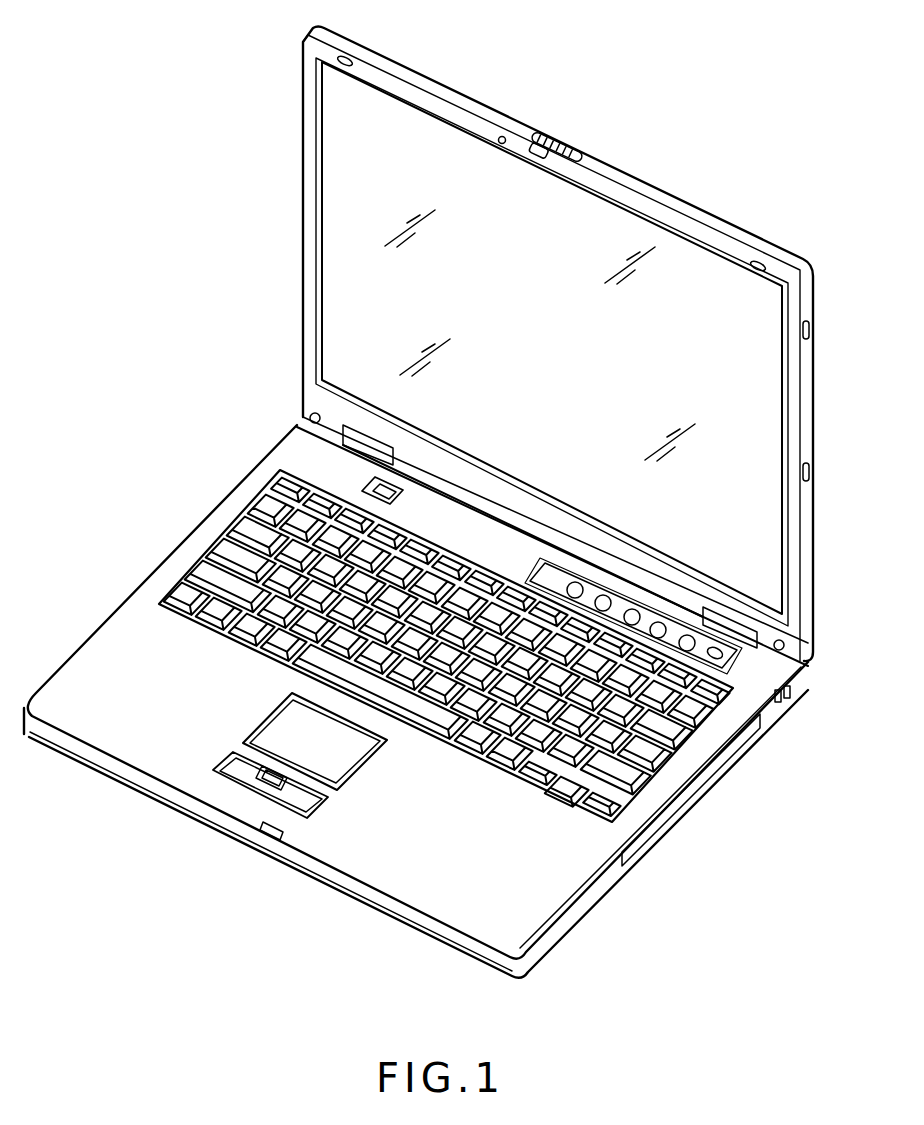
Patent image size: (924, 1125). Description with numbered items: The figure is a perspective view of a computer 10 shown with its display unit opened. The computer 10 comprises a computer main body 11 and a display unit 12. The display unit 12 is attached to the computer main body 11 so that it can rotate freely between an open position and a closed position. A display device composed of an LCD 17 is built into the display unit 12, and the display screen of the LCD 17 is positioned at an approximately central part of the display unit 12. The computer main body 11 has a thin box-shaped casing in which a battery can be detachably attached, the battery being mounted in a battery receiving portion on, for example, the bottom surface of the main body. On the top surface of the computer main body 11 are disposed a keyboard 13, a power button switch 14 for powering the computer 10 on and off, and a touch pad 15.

The computer 10 is at (787, 817).
The computer main body 11 is at (577, 915).
The display unit 12 is at (803, 502).
The keyboard 13 is at (590, 772).
The power button switch 14 is at (365, 482).
The touch pad 15 is at (342, 768).
The LCD 17 is at (777, 363).